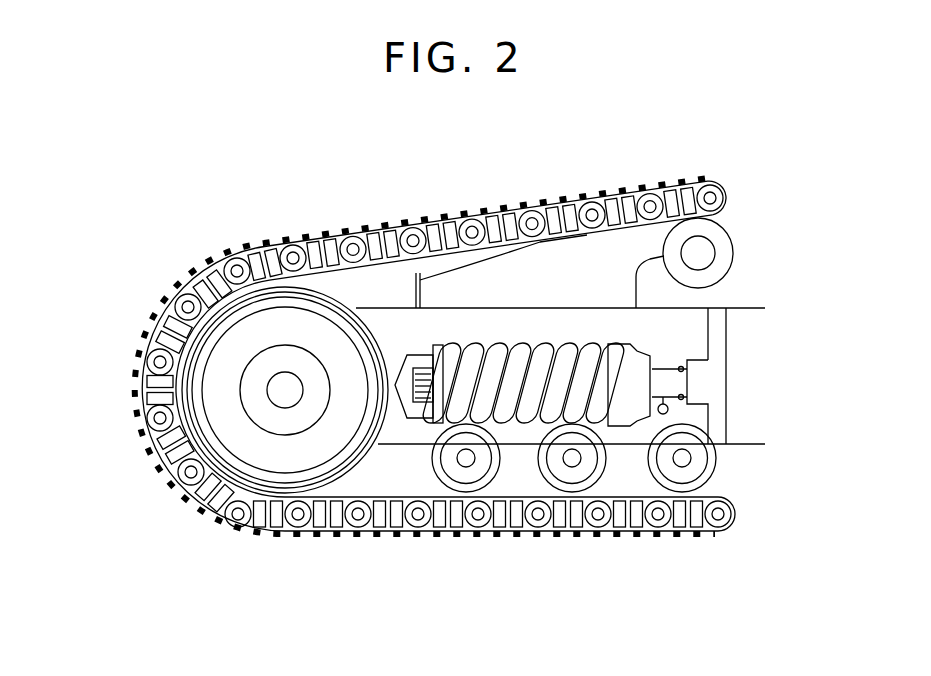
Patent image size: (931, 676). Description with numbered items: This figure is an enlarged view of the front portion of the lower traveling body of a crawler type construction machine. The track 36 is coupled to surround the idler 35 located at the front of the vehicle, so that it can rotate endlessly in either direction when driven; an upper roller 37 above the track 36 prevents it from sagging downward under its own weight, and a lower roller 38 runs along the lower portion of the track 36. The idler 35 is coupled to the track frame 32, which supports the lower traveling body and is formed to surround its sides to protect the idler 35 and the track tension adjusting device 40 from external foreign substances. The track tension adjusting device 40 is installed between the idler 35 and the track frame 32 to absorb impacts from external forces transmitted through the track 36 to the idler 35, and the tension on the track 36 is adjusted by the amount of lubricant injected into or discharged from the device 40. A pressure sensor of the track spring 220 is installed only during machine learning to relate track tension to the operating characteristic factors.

The track frame 32 is at (703, 382).
The idler 35 is at (402, 398).
The track 36 is at (337, 538).
The upper roller 37 is at (725, 258).
The lower roller 38 is at (572, 477).
The track tension adjusting device 40 is at (520, 428).
The pressure sensor of track spring 220 is at (687, 406).